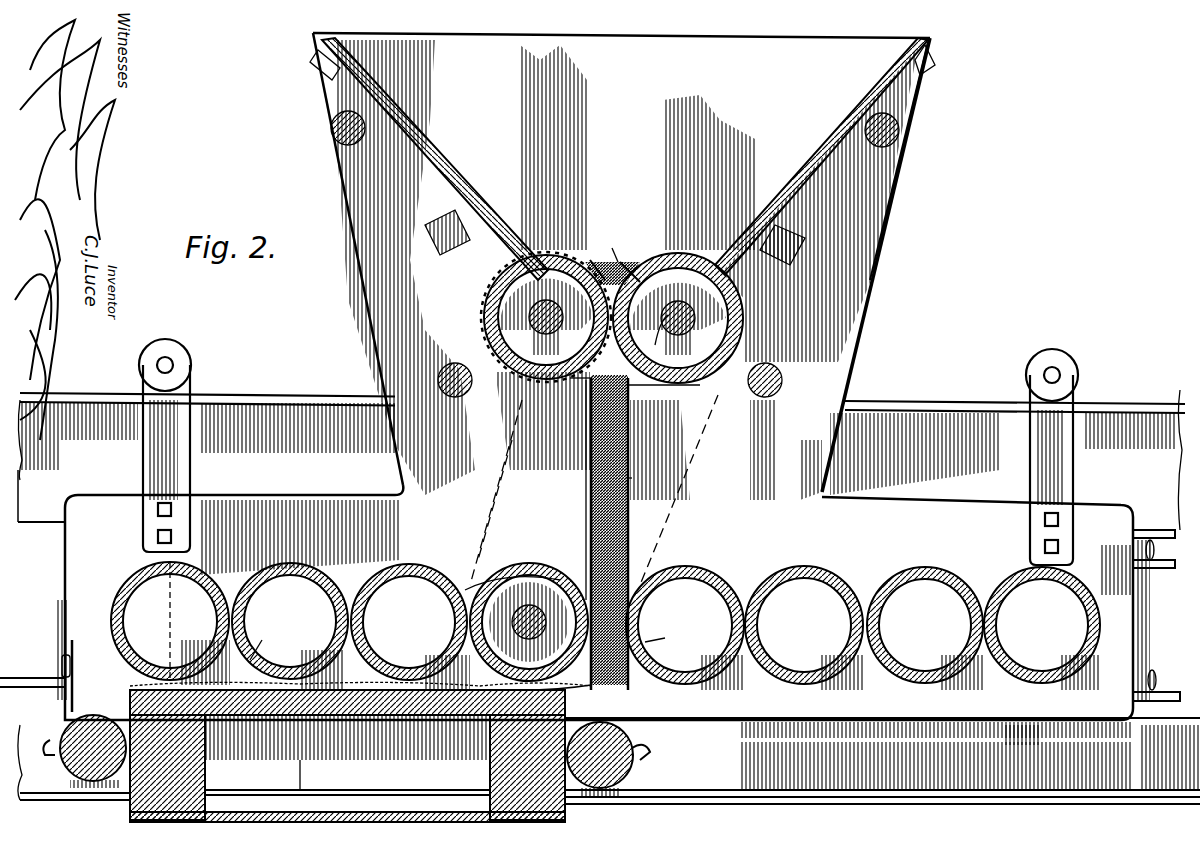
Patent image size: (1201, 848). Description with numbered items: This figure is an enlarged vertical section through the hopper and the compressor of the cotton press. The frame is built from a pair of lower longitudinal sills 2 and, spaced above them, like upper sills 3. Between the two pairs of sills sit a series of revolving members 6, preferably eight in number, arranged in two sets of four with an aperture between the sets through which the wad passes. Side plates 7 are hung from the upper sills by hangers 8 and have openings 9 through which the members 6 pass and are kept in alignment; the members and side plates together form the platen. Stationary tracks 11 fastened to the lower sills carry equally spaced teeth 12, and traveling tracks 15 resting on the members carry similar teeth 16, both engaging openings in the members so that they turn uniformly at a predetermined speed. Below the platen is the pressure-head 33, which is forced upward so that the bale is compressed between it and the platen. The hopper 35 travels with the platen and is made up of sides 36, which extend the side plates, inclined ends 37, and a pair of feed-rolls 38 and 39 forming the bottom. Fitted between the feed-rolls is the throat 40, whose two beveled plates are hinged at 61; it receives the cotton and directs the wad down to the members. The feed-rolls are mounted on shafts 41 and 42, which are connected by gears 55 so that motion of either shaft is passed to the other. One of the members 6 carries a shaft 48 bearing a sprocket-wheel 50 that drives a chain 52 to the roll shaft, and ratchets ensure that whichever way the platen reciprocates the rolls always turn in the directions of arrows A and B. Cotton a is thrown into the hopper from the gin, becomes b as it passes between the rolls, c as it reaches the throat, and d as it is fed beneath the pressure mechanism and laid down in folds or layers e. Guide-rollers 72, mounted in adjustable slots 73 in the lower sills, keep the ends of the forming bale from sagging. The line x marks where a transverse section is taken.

The longitudinal sills 2 is at (882, 761).
The upper sills 3 is at (601, 545).
The revolving members 6 is at (605, 626).
The side plates 7 is at (154, 509).
The hangers 8 is at (138, 345).
The openings 9 is at (640, 665).
The stationary tracks 11 is at (596, 725).
The teeth 12 is at (601, 657).
The traveling tracks 15 is at (1157, 549).
The teeth 16 is at (1164, 573).
The pressure-head 33 is at (438, 720).
The hopper 35 is at (539, 291).
The hopper sides 36 is at (905, 155).
The inclined ends 37 is at (480, 162).
The feed-roll 38 is at (597, 258).
The feed-roll 39 is at (630, 262).
The throat 40 is at (628, 430).
The shaft 41 is at (540, 312).
The shaft 42 is at (680, 335).
The shaft 48 is at (529, 622).
The sprocket-wheel 50 is at (505, 575).
The chain 52 is at (510, 485).
The gears 55 is at (585, 262).
The hinge 61 is at (628, 418).
The guide-rollers 72 is at (640, 735).
The slots 73 is at (354, 765).
The arrow A is at (565, 238).
The arrow B is at (648, 220).
The cotton in hopper a is at (585, 490).
The cotton between feed-rolls b is at (655, 330).
The cotton in throat c is at (628, 478).
The cotton being fed d is at (662, 637).
The folds or layers of cotton e is at (264, 635).
The section line x is at (267, 776).